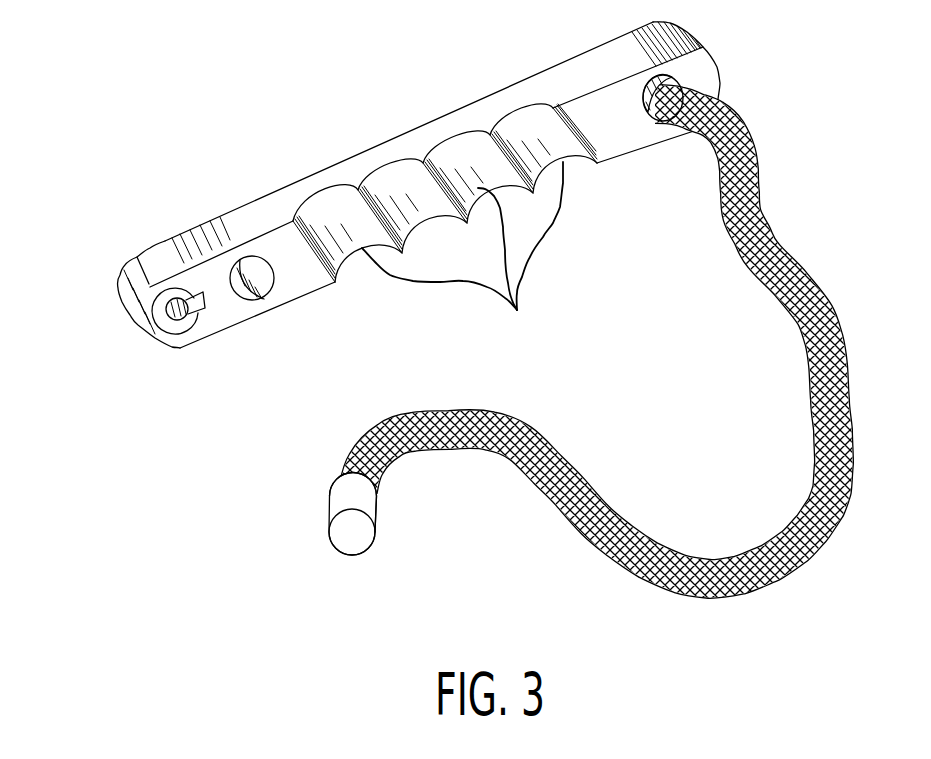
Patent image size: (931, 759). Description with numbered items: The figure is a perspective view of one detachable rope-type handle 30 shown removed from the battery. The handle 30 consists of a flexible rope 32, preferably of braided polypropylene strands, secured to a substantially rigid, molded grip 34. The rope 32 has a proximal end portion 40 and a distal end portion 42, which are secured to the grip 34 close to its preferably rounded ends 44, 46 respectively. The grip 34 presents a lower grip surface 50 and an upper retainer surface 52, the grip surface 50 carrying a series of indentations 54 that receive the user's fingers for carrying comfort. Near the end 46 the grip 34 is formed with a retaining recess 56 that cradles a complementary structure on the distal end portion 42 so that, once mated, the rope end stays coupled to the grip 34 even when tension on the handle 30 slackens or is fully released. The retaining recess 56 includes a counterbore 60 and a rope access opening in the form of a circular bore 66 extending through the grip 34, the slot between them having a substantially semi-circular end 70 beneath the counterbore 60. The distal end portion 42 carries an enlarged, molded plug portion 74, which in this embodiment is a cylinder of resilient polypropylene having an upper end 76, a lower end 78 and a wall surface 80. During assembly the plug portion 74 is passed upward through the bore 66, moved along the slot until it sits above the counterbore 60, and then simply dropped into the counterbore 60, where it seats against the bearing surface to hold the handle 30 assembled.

The rope-type handle 30 is at (214, 169).
The flexible rope 32 is at (810, 392).
The grip 34 is at (272, 213).
The proximal end portion 40 is at (680, 95).
The distal end portion 42 is at (301, 493).
The rounded end 44 is at (700, 50).
The rounded end 46 is at (147, 333).
The lower grip surface 50 is at (626, 129).
The upper retainer surface 52 is at (390, 122).
The indentations 54 is at (445, 230).
The retaining recess 56 is at (214, 306).
The counterbore 60 is at (172, 307).
The circular bore 66 is at (264, 296).
The end of the slot 70 is at (170, 347).
The plug portion 74 is at (338, 507).
The upper end 76 is at (347, 538).
The lower end 78 is at (335, 483).
The wall surface 80 is at (372, 508).